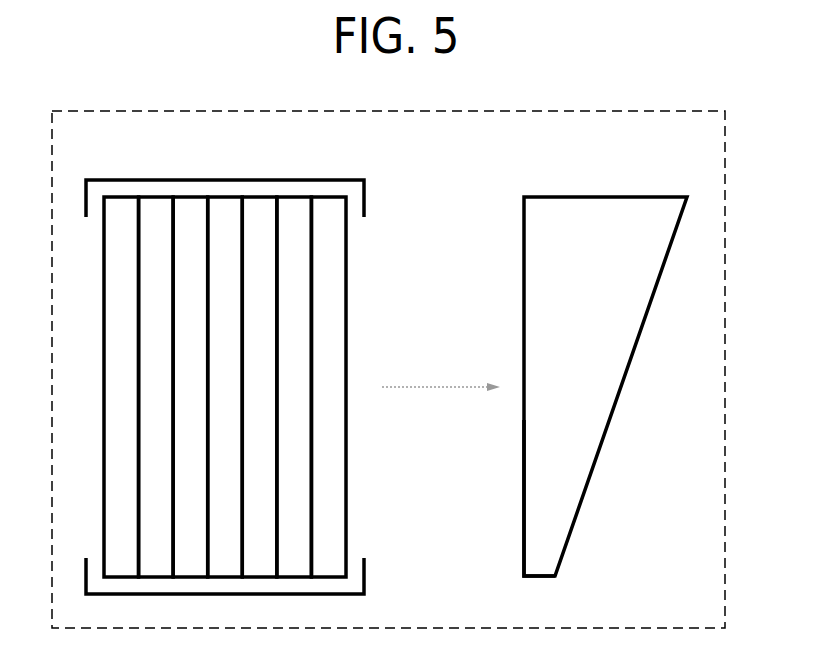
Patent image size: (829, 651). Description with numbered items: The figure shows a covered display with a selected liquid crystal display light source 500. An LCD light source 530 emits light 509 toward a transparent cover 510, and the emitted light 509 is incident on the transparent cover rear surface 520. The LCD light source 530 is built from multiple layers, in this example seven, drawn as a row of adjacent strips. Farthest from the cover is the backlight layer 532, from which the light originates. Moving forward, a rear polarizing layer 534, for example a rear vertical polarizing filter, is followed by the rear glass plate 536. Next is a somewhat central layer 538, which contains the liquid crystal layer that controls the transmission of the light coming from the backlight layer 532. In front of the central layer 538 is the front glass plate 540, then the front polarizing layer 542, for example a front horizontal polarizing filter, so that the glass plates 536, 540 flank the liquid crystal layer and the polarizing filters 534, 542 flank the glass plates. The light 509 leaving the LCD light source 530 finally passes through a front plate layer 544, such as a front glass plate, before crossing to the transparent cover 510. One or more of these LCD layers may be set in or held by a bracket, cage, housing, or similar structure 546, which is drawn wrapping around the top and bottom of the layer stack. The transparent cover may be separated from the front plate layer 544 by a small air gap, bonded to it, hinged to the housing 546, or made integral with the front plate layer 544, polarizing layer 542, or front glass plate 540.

The selected liquid crystal display light source 500 is at (605, 145).
The emitted light 509 is at (441, 407).
The transparent cover 510 is at (602, 235).
The transparent cover rear surface 520 is at (522, 492).
The LCD light source 530 is at (376, 187).
The backlight layer 532 is at (135, 226).
The rear polarizing layer 534 is at (170, 277).
The rear glass plate 536 is at (203, 336).
The central layer 538 is at (238, 397).
The front glass plate 540 is at (271, 449).
The front polarizing layer 542 is at (306, 496).
The front plate layer 544 is at (342, 522).
The bracket 546 is at (366, 573).